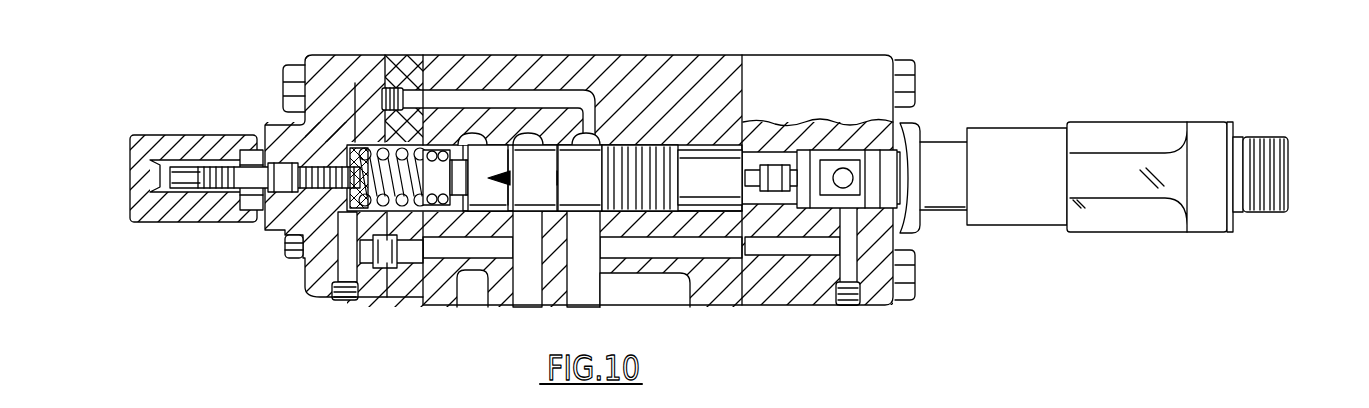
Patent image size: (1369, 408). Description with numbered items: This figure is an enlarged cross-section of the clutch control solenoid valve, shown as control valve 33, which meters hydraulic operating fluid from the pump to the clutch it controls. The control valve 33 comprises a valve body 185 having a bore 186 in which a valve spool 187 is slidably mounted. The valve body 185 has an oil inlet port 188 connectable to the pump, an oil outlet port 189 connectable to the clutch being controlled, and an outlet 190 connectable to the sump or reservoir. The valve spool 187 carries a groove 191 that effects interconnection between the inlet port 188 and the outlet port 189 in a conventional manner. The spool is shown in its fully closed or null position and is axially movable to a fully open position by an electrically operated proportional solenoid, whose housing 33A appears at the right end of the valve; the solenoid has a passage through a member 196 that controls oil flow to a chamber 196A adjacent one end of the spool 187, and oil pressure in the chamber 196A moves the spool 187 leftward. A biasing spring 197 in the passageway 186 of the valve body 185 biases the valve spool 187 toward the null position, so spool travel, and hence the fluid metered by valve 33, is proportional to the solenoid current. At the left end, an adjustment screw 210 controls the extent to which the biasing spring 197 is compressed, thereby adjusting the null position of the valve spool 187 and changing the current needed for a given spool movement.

The control valve 33 is at (709, 178).
The solenoid / actuator housing 33A is at (1145, 122).
The valve body 185 is at (628, 62).
The bore 186 is at (708, 147).
The valve spool 187 is at (593, 147).
The oil inlet port 188 is at (468, 297).
The oil outlet port 189 is at (517, 300).
The outlet 190 is at (573, 293).
The groove 191 is at (547, 147).
The member 196 is at (820, 162).
The chamber 196A is at (747, 183).
The biasing spring 197 is at (380, 140).
The adjustment screw 210 is at (283, 240).